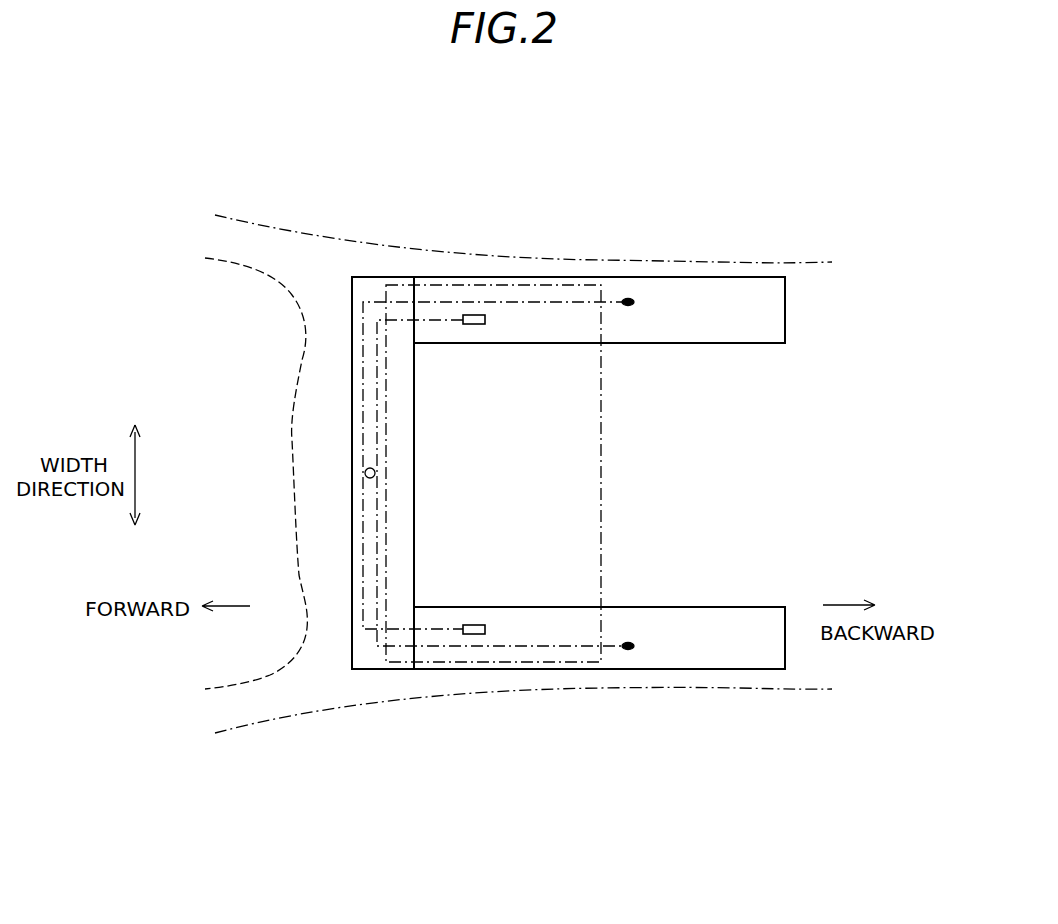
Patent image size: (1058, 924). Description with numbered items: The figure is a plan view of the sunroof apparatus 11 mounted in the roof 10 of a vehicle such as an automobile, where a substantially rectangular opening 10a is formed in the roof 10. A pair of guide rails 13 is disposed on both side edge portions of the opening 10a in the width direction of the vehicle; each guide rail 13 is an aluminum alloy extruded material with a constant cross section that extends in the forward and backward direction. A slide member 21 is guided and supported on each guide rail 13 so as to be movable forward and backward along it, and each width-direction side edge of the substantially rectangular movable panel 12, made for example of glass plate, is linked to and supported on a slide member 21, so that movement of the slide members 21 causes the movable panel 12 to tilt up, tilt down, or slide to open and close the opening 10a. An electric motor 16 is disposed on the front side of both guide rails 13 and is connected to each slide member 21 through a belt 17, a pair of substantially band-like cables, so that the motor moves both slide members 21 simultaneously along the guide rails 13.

The roof 10 is at (597, 688).
The opening 10a is at (542, 495).
The sunroof apparatus 11 is at (709, 255).
The movable panel 12 is at (601, 473).
The guide rail 13 is at (553, 277).
The electric motor 16 is at (368, 478).
The belt 17 is at (363, 547).
The slide member 21 is at (476, 325).